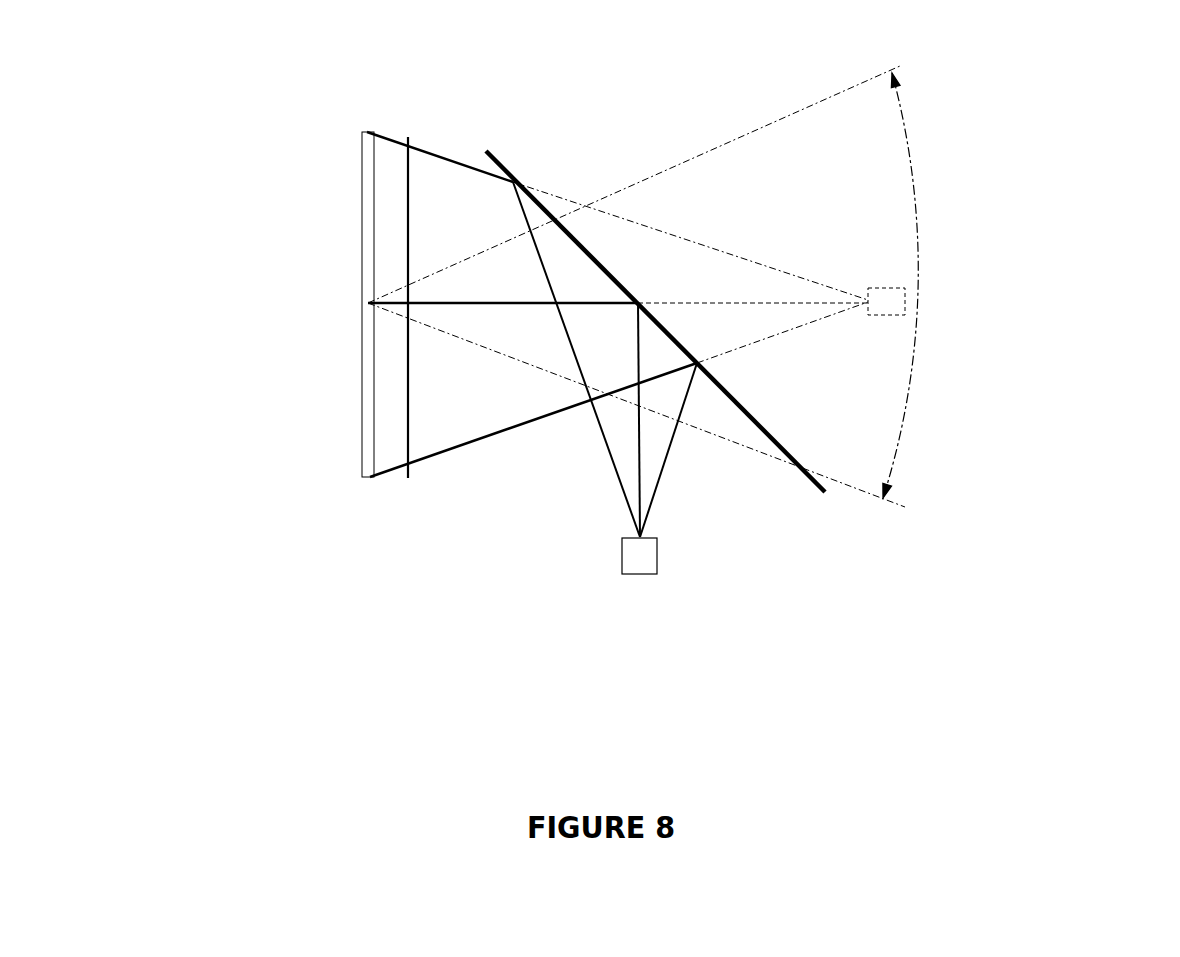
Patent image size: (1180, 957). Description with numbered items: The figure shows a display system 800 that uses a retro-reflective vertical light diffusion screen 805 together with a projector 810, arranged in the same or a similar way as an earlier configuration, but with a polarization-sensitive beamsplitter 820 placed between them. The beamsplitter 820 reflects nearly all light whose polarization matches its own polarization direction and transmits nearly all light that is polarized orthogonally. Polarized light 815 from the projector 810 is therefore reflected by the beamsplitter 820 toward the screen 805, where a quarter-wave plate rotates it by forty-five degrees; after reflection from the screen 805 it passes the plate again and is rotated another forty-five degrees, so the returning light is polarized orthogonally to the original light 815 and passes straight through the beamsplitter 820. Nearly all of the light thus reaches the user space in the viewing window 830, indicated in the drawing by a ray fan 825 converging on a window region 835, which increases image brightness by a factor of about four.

The display system 800 is at (668, 30).
The retro-reflective vertical light diffusion screen 805 is at (362, 372).
The projector 810 is at (642, 578).
The light 815 is at (602, 475).
The polarization-sensitive beamsplitter 820 is at (420, 160).
The viewing cone rays 825 is at (798, 110).
The viewing window 830 is at (908, 412).
The viewing window 835 is at (890, 313).